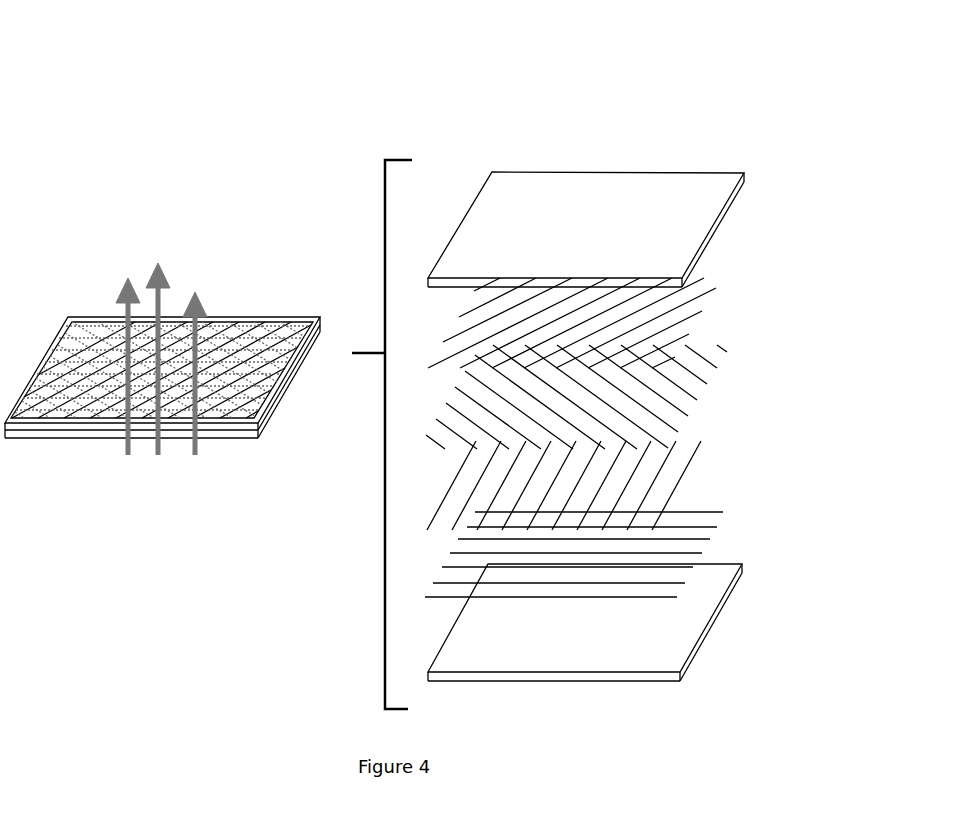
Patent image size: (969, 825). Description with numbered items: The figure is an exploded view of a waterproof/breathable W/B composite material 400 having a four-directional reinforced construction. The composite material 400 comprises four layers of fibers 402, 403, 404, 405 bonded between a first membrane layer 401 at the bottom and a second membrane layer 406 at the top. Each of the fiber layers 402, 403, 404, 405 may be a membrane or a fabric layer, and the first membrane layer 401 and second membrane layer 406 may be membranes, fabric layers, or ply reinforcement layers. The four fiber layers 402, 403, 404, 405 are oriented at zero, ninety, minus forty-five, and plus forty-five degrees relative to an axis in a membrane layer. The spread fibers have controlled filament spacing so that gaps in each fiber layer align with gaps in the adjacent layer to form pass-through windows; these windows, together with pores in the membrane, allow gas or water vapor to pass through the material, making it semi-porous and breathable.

The W/B composite material 400 is at (77, 29).
The first membrane layer 401 is at (683, 615).
The layer of fibers 402 is at (713, 528).
The layer of fibers 403 is at (690, 465).
The layer of fibers 404 is at (717, 370).
The layer of fibers 405 is at (715, 272).
The second membrane layer 406 is at (708, 205).